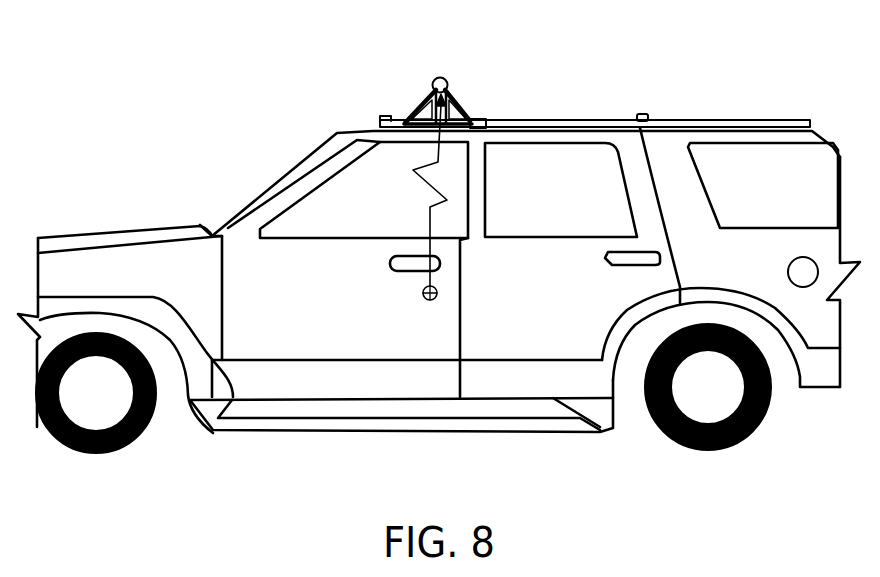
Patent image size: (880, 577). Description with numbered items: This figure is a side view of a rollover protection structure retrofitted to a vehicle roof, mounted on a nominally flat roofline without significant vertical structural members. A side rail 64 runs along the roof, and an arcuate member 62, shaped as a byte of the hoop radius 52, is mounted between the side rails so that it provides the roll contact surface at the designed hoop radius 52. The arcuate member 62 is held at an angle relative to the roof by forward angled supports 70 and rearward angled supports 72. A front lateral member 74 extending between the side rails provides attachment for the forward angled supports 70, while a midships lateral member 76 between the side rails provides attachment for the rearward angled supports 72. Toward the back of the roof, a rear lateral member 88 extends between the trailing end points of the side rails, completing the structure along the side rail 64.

The hoop radius 52 is at (478, 226).
The arcuate member 62 is at (433, 82).
The side rail 64 is at (527, 118).
The forward angled supports 70 is at (418, 108).
The rearward angled supports 72 is at (458, 114).
The front lateral member 74 is at (378, 118).
The midships lateral member 76 is at (484, 118).
The rear lateral member 88 is at (642, 114).